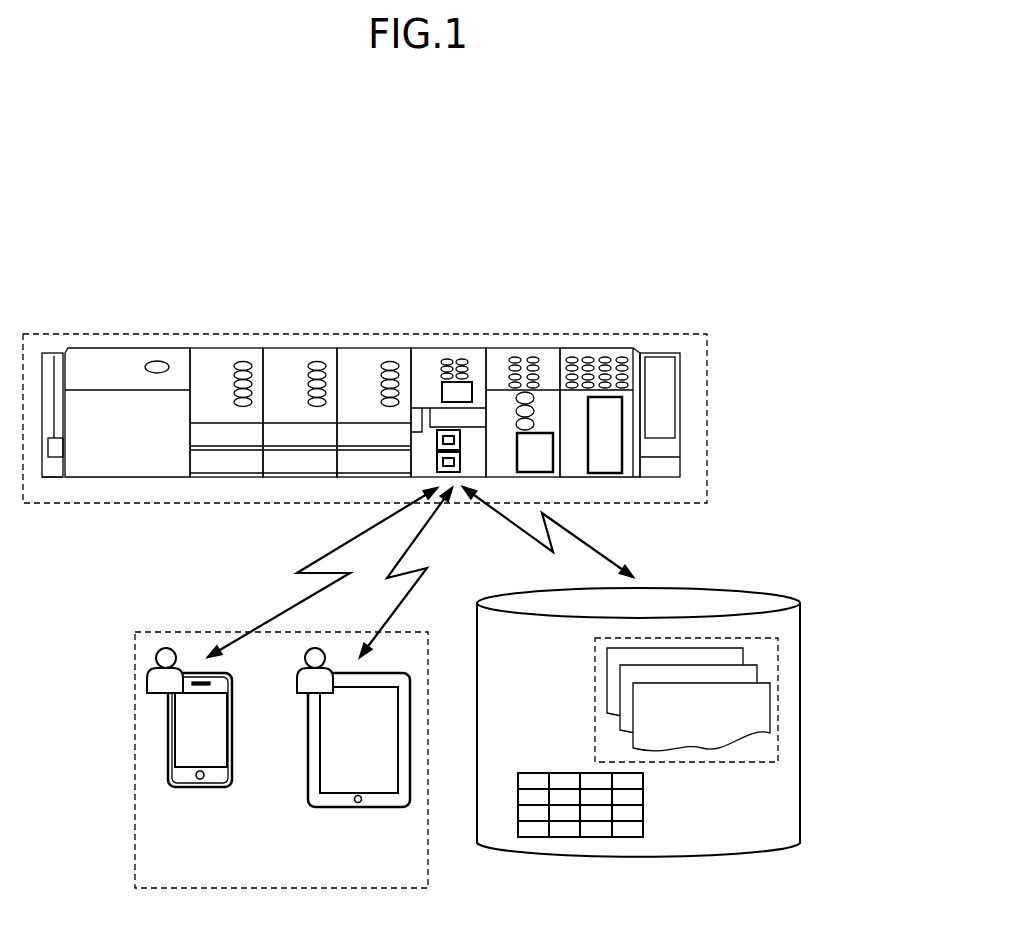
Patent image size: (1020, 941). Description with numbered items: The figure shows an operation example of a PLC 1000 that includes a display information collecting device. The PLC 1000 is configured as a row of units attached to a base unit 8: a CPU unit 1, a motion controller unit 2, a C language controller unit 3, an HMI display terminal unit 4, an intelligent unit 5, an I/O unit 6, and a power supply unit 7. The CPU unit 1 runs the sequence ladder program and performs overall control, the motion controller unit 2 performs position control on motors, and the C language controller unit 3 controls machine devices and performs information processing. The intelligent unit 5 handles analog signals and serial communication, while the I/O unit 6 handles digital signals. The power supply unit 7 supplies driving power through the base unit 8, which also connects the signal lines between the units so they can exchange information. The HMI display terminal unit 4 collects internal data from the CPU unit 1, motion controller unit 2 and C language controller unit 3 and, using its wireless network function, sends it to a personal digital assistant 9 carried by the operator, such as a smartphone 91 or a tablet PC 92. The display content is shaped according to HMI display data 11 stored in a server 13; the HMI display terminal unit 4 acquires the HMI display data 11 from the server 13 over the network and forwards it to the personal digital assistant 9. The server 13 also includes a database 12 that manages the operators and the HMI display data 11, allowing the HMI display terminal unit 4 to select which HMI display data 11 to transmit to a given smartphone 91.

The CPU unit 1 is at (226, 350).
The motion controller unit 2 is at (293, 353).
The C language controller unit 3 is at (375, 353).
The HMI display terminal unit 4 is at (460, 353).
The intelligent unit 5 is at (523, 353).
The I/O unit 6 is at (598, 353).
The power supply unit 7 is at (105, 353).
The base unit 8 is at (663, 353).
The personal digital assistant 9 is at (135, 763).
The smartphone 91 is at (198, 812).
The tablet PC 92 is at (357, 825).
The HMI display data 11 is at (595, 663).
The database 12 is at (533, 773).
The server 13 is at (727, 590).
The PLC 1000 is at (709, 417).